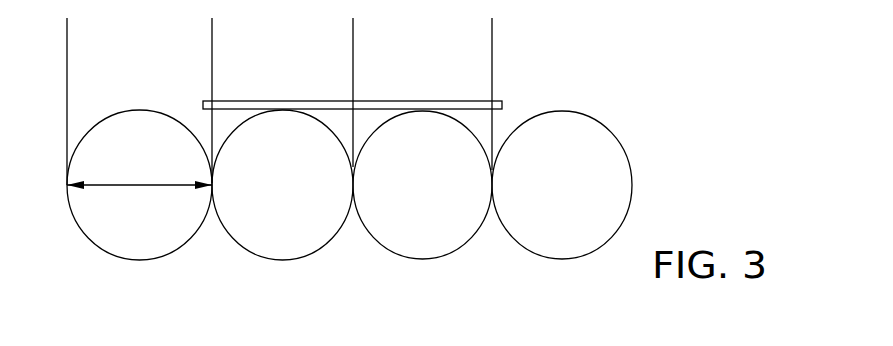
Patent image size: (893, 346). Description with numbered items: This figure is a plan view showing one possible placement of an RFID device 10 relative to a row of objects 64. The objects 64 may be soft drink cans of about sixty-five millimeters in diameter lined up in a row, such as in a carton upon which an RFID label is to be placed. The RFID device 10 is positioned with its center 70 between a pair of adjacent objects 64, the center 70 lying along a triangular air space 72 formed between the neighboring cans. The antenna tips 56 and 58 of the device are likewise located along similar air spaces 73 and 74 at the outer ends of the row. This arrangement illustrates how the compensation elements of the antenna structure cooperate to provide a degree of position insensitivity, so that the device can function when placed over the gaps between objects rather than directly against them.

The RFID device 10 is at (285, 88).
The antenna tip 56 is at (203, 97).
The antenna tip 58 is at (508, 97).
The objects 64 is at (263, 230).
The center 70 is at (360, 95).
The triangular air space 72 is at (363, 125).
The air space 73 is at (205, 121).
The air space 74 is at (500, 118).